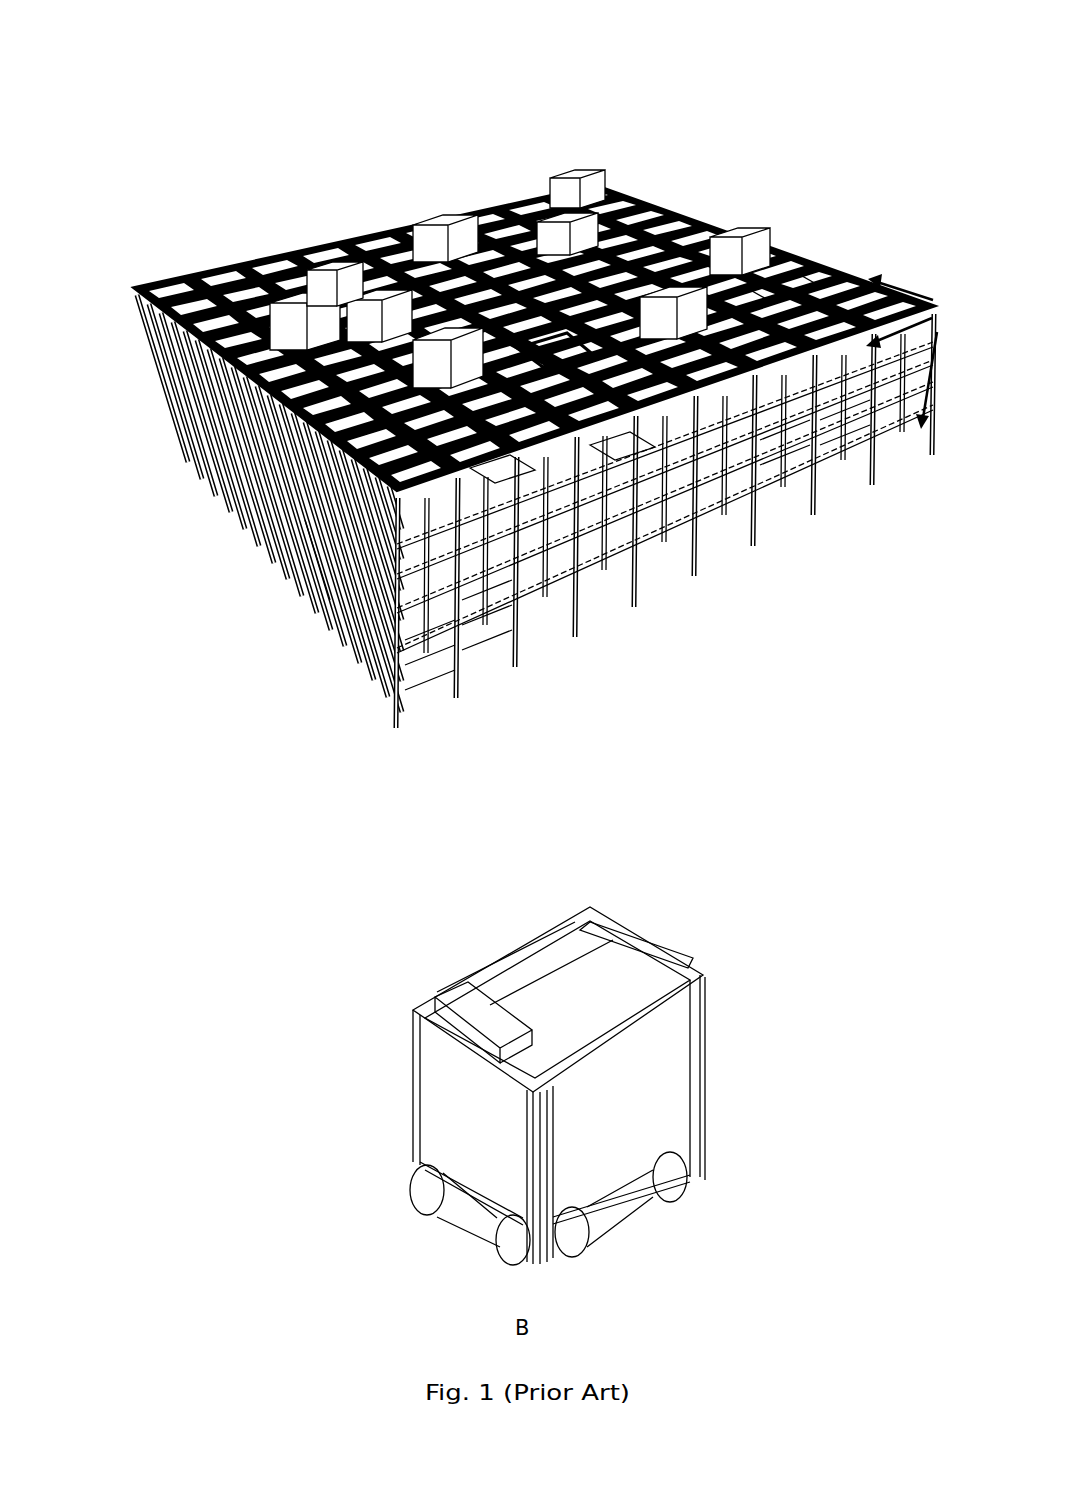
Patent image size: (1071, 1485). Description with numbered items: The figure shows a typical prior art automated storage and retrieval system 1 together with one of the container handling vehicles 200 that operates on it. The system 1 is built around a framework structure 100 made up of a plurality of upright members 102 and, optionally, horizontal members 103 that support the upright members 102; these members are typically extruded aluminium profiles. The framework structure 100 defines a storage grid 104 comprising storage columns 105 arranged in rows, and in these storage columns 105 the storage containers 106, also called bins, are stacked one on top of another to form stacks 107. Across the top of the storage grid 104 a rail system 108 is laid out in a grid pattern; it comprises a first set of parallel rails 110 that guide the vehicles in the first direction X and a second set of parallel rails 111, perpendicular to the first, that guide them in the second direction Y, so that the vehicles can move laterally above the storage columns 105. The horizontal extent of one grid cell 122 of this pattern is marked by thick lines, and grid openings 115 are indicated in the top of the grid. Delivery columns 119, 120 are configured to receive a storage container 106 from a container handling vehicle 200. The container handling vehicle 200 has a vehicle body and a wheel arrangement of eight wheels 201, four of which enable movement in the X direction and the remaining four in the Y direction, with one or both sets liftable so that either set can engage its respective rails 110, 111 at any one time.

In FIG. 1A, the automated storage and retrieval system 1 is at (484, 108).
In FIG. 1A, the framework structure 100 is at (160, 426).
In FIG. 1A, the upright members 102 is at (393, 613).
In FIG. 1A, the horizontal members 103 is at (733, 476).
In FIG. 1A, the storage grid 104 is at (130, 297).
In FIG. 1A, the storage columns 105 is at (310, 527).
In FIG. 1A, the storage containers 106 is at (473, 523).
In FIG. 1A, the stacks 107 is at (843, 490).
In FIG. 1A, the rail system 108 is at (857, 282).
In FIG. 1A, the first set of parallel rails 110 is at (805, 300).
In FIG. 1A, the second set of parallel rails 111 is at (390, 237).
In FIG. 1A, the grid openings / access openings 115 is at (763, 283).
In FIG. 1A, the delivery column 119 is at (523, 483).
In FIG. 1A, the delivery column 120 is at (609, 486).
In FIG. 1A, the grid cell 122 is at (525, 335).
In FIG. 1A, the container handling vehicle 200 is at (575, 195).
In FIG. 1B, the container handling vehicle 200 is at (705, 1020).
In FIG. 1B, the wheels 201 is at (378, 1157).